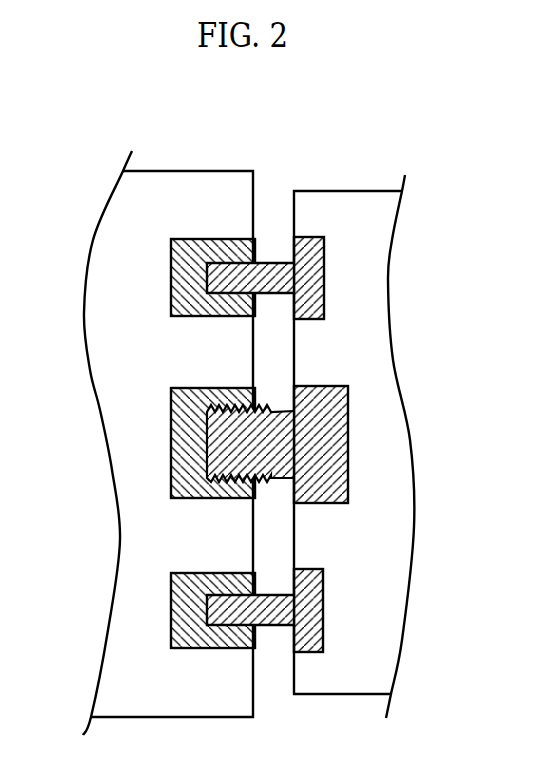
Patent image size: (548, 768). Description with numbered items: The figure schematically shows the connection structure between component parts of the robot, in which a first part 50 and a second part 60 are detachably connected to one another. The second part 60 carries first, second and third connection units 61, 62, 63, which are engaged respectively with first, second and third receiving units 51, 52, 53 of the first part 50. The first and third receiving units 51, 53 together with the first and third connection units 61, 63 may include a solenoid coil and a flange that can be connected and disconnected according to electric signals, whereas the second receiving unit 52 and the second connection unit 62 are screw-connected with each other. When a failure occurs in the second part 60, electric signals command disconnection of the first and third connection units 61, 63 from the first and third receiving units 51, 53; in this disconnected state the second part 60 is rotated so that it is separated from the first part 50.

The first part 50 is at (167, 182).
The second part 60 is at (340, 203).
The first receiving unit 51 is at (172, 275).
The second receiving unit 52 is at (172, 456).
The third receiving unit 53 is at (172, 608).
The first connection unit 61 is at (325, 270).
The second connection unit 62 is at (349, 437).
The third connection unit 63 is at (324, 608).